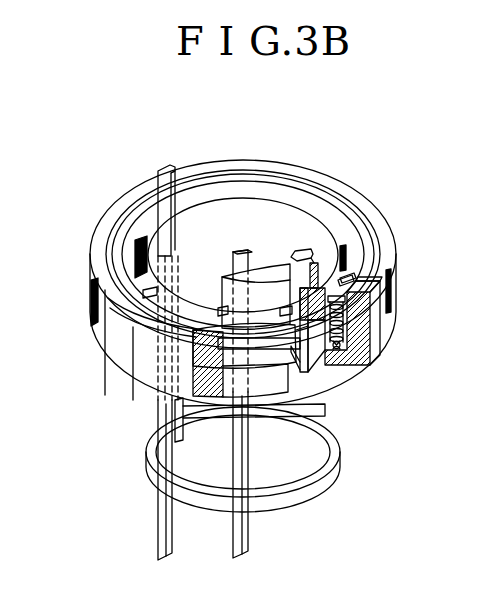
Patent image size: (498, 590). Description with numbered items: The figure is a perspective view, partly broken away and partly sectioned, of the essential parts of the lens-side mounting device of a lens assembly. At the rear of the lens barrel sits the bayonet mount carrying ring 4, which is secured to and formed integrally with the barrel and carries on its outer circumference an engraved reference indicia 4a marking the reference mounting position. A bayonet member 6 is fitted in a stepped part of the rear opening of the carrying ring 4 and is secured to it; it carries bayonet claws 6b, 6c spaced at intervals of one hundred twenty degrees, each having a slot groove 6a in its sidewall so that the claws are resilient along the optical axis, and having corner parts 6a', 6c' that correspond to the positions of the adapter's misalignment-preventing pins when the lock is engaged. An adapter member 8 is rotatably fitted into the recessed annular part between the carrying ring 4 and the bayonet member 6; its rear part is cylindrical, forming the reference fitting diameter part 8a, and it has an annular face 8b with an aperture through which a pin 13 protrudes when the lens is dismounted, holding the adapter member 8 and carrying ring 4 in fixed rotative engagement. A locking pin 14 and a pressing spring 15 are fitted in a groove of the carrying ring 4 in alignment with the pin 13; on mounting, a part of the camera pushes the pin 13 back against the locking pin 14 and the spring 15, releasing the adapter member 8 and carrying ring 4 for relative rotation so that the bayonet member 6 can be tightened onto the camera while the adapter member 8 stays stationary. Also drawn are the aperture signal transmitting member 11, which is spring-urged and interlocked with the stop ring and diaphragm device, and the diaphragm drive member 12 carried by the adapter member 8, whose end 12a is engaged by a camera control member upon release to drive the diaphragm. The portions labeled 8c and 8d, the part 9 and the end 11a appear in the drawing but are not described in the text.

The bayonet mount carrying ring 4 is at (380, 305).
The reference indicia 4a is at (317, 357).
The bayonet member 6 is at (350, 221).
The slot groove 6a is at (92, 257).
The corner part of bayonet claw 6a' is at (102, 313).
The bayonet claw 6b is at (340, 262).
The bayonet claw 6c is at (277, 270).
The corner part of bayonet claw 6c' is at (316, 239).
The adapter member 8 is at (300, 255).
The reference fitting diameter part 8a is at (287, 170).
The annular face of adapter member 8b is at (352, 283).
The contact spring arm 8c is at (355, 320).
The contact spring lower arm 8d is at (313, 372).
The ring 9 is at (240, 176).
The aperture signal transmitting member 11 is at (160, 487).
The terminal pin upper end 11a is at (160, 168).
The diaphragm drive member 12 is at (289, 412).
The end of diaphragm drive member 12a is at (241, 252).
The pin 13 is at (379, 291).
The locking pin 14 is at (342, 345).
The pressing spring 15 is at (338, 360).